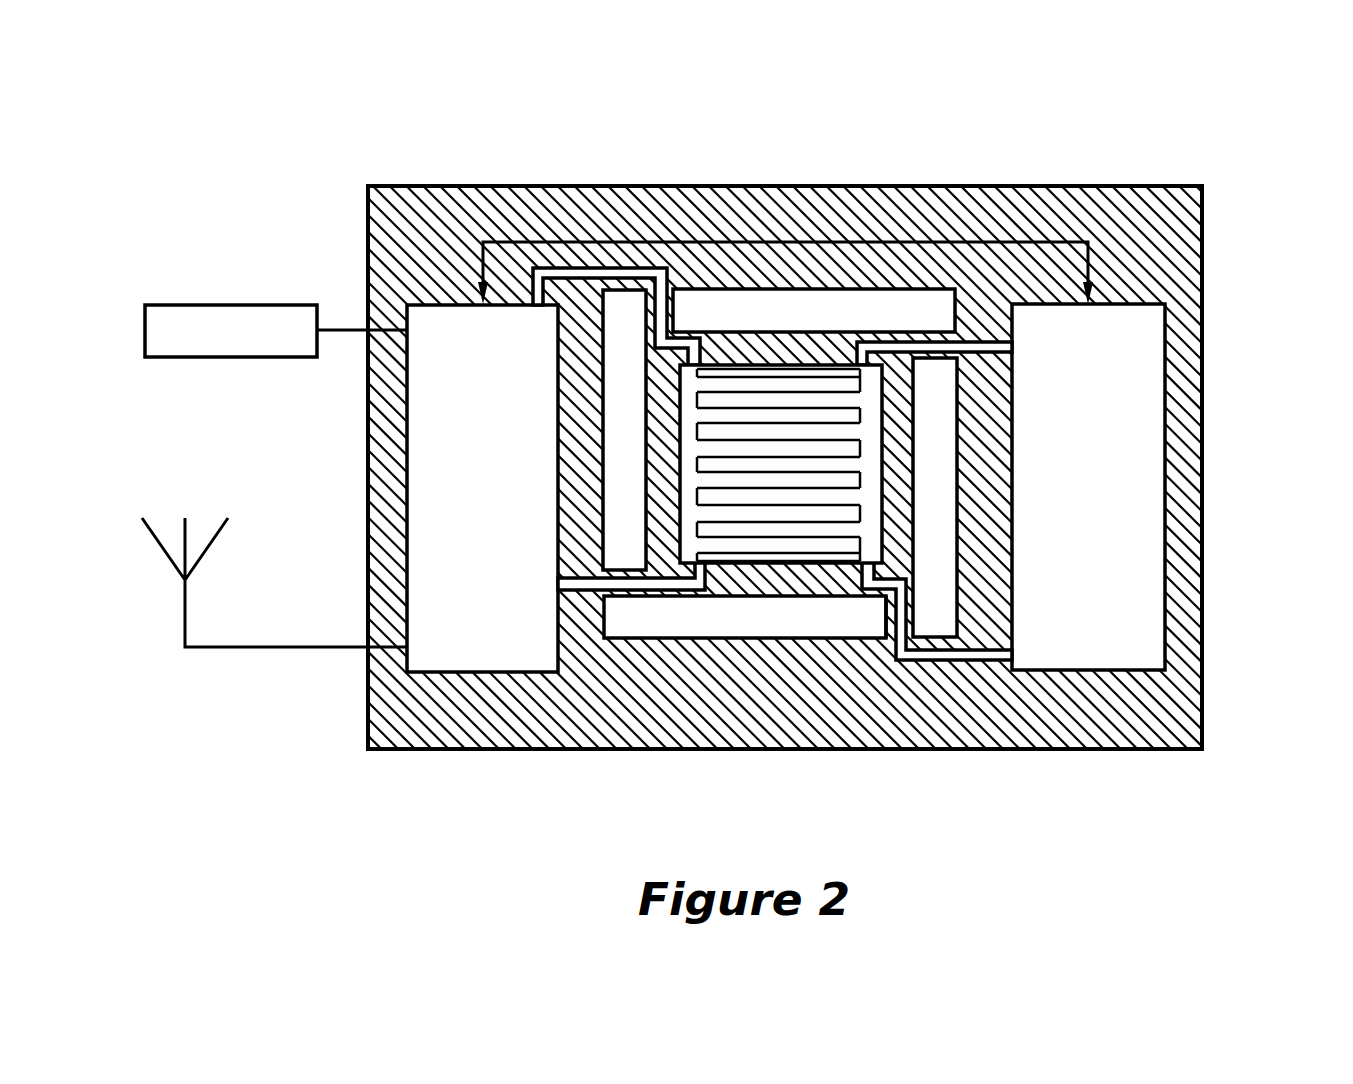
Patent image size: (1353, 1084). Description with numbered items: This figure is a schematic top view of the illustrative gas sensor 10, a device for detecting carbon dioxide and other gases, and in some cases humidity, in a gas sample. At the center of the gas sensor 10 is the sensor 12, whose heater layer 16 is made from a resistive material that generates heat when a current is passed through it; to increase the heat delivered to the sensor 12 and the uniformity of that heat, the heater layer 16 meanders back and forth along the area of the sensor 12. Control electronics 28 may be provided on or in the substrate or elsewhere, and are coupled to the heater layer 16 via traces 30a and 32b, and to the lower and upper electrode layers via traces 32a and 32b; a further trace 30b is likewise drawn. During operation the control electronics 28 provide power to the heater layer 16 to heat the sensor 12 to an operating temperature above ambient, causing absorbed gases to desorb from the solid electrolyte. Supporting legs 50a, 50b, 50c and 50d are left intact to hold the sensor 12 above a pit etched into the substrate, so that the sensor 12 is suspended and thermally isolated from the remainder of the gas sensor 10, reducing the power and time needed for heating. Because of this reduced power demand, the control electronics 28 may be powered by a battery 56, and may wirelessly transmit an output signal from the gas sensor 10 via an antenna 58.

The gas sensor 10 is at (290, 150).
The sensor 12 is at (918, 318).
The heater layer 16 is at (786, 377).
The control electronics 28 is at (418, 610).
The trace 30a is at (569, 272).
The second electrode 30b is at (583, 590).
The trace 32a is at (872, 350).
The trace 32b is at (958, 660).
The supporting leg 50a is at (674, 268).
The supporting leg 50b is at (934, 357).
The supporting leg 50c is at (887, 652).
The supporting leg 50d is at (651, 598).
The battery 56 is at (228, 305).
The antenna 58 is at (183, 537).